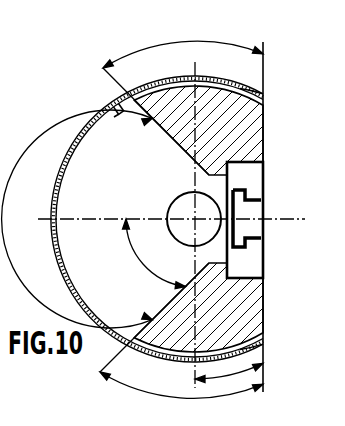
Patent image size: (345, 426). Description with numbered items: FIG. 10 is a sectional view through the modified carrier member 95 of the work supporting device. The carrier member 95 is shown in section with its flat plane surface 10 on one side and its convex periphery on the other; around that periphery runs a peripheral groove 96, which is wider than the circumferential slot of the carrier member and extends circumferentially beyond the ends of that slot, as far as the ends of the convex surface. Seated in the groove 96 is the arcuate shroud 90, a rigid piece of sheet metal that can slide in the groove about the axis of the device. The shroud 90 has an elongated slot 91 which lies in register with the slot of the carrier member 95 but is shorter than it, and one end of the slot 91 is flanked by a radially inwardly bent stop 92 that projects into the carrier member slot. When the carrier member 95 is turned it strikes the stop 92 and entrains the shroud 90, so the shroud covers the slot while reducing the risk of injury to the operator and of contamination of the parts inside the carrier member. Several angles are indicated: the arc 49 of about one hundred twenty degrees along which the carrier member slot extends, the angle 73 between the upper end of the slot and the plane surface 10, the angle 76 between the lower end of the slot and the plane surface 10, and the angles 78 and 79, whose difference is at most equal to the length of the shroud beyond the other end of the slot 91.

The plane surface 10 is at (264, 296).
The arc 49 is at (90, 180).
The angle 73 is at (209, 41).
The angle 76 is at (218, 394).
The angle 78 is at (140, 262).
The angle 79 is at (264, 351).
The shroud 90 is at (147, 85).
The elongated slot 91 is at (90, 127).
The stop 92 is at (111, 106).
The carrier member 95 is at (250, 117).
The peripheral groove 96 is at (244, 89).